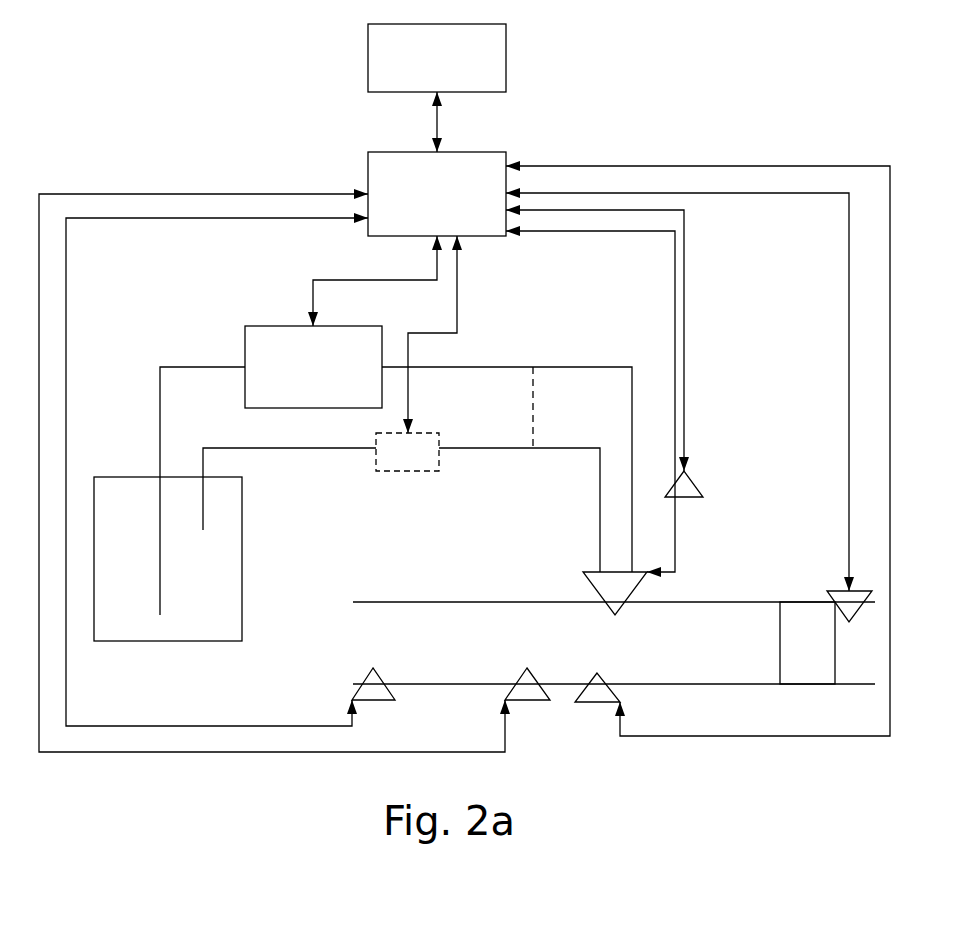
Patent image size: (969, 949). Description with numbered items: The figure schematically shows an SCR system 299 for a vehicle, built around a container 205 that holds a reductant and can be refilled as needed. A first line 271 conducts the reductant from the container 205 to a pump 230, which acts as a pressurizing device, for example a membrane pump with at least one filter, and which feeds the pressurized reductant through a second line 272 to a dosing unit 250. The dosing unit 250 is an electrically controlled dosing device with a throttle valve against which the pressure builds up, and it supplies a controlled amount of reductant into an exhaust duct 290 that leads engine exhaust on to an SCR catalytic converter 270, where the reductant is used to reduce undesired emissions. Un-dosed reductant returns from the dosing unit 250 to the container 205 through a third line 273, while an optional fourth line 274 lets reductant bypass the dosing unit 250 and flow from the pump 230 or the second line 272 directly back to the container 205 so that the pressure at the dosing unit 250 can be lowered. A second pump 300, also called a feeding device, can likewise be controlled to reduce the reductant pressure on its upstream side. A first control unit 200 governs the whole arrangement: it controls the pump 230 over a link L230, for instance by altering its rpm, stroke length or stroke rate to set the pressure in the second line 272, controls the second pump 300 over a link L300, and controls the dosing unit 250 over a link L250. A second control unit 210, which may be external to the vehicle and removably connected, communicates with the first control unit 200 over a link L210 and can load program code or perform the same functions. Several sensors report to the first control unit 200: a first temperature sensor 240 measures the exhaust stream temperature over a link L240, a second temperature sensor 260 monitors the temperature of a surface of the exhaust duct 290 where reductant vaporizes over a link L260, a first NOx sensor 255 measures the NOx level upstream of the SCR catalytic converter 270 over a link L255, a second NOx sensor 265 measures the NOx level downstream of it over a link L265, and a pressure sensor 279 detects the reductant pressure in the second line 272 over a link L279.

The SCR system 299 is at (599, 84).
The second control unit 210 is at (437, 58).
The first control unit 200 is at (437, 194).
The link L210 is at (438, 118).
The pump 230 is at (313, 367).
The link L230 is at (307, 293).
The second pump 300 is at (407, 452).
The link L300 is at (458, 318).
The container 205 is at (242, 562).
The first line 271 is at (160, 360).
The second line 272 is at (578, 365).
The third line 273 is at (490, 448).
The fourth line 274 is at (533, 413).
The dosing unit 250 is at (583, 573).
The pressure sensor 279 is at (700, 490).
The link L279 is at (684, 355).
The link L250 is at (675, 292).
The second NOx sensor 265 is at (837, 595).
The link L265 is at (848, 328).
The exhaust duct 290 is at (727, 683).
The SCR catalytic converter 270 is at (807, 643).
The first temperature sensor 240 is at (373, 668).
The second temperature sensor 260 is at (525, 673).
The first NOx sensor 255 is at (597, 673).
The link L240 is at (66, 290).
The link L260 is at (505, 752).
The link L255 is at (700, 736).